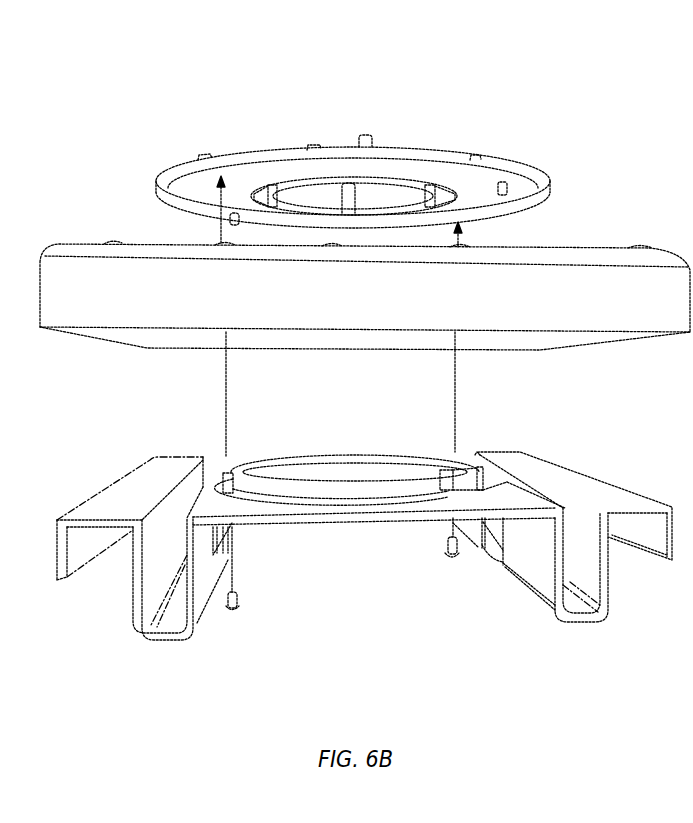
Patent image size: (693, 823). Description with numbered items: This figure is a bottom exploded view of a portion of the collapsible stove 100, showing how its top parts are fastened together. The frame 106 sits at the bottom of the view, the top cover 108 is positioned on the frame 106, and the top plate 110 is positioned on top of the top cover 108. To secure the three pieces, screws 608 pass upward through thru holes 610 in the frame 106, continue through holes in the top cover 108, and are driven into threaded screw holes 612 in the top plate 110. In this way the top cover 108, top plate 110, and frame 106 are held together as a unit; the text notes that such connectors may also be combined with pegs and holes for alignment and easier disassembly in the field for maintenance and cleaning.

The collapsible stove 100 is at (109, 46).
The frame 106 is at (595, 480).
The top cover 108 is at (592, 250).
The top plate 110 is at (400, 146).
The screws 608 is at (237, 607).
The thru holes 610 is at (227, 492).
The threaded screw holes 612 is at (222, 170).